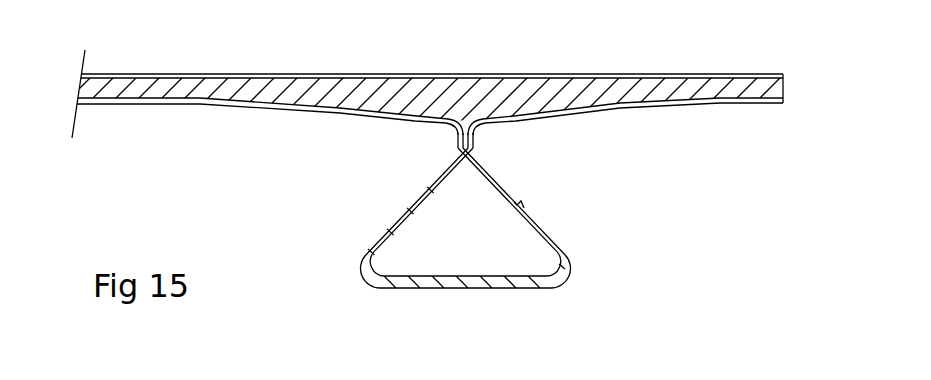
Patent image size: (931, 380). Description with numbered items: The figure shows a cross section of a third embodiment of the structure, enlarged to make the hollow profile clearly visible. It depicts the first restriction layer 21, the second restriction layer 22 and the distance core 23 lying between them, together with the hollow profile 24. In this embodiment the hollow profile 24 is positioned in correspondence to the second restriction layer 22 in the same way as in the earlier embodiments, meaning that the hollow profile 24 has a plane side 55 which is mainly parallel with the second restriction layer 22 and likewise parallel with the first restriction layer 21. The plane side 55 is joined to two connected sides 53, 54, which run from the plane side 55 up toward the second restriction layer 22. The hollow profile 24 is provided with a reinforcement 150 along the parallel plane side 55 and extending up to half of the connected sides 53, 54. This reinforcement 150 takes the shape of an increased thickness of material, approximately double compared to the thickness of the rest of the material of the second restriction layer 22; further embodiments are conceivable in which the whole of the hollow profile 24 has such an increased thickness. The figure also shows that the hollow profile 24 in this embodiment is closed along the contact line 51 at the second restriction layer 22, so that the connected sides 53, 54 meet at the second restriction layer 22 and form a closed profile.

The first restriction layer 21 is at (273, 75).
The second restriction layer 22 is at (222, 106).
The distance core 23 is at (595, 98).
The hollow profile 24 is at (508, 240).
The contact line 51 is at (466, 152).
The connected side 53 is at (433, 190).
The connected side 54 is at (504, 192).
The plane side 55 is at (533, 287).
The reinforcement 150 is at (422, 288).